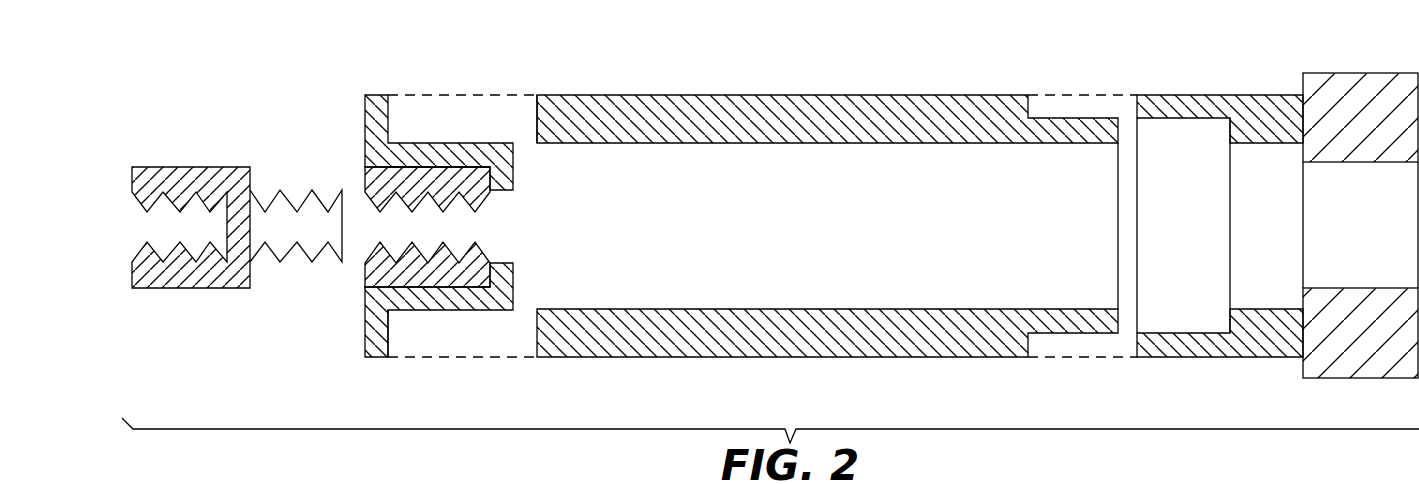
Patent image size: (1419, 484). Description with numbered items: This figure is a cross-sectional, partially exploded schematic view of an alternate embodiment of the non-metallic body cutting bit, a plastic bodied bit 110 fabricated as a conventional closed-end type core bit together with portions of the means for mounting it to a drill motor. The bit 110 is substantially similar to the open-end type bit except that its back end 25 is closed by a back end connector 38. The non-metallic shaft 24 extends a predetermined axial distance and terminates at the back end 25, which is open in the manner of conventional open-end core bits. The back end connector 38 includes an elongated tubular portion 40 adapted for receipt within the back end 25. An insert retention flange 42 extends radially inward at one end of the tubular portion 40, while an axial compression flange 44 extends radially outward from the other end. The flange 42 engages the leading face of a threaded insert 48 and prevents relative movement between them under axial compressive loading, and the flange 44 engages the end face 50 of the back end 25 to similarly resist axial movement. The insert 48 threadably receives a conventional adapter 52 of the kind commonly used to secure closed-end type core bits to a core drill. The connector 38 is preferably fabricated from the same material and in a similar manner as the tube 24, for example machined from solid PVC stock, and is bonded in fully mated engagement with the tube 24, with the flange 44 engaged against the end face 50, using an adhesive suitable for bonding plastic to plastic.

The plastic bodied bit 110 is at (220, 85).
The adapter 52 is at (196, 290).
The elongated tubular portion 40 is at (443, 310).
The axial compression flange 44 is at (392, 323).
The threaded insert 48 is at (413, 177).
The back end connector 38 is at (452, 165).
The insert retention flange 42 is at (513, 278).
The end face 50 is at (537, 112).
The non-metallic shaft 24 is at (736, 95).
The back end 25 is at (566, 292).